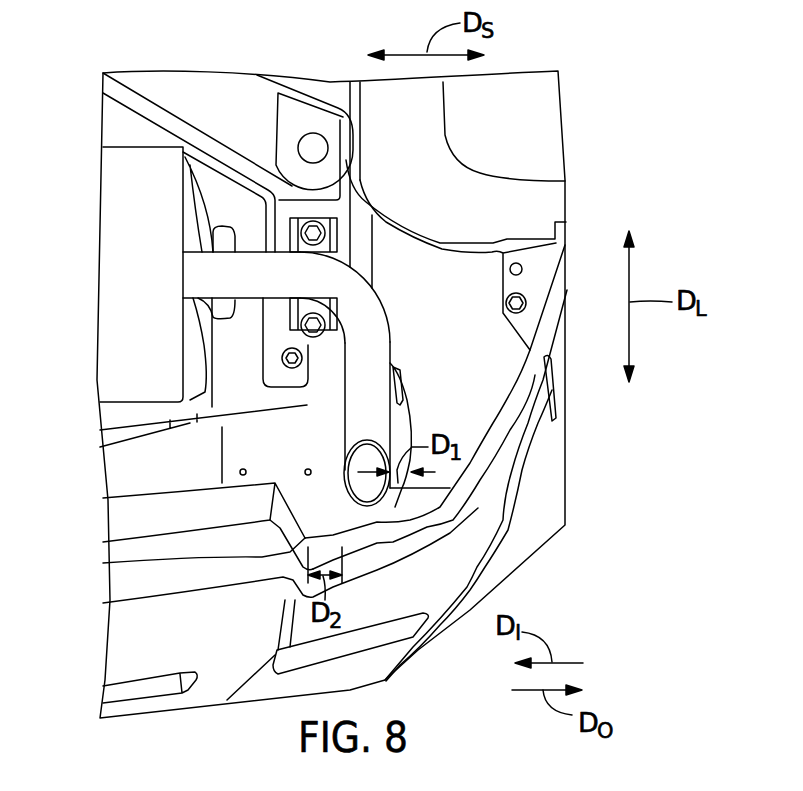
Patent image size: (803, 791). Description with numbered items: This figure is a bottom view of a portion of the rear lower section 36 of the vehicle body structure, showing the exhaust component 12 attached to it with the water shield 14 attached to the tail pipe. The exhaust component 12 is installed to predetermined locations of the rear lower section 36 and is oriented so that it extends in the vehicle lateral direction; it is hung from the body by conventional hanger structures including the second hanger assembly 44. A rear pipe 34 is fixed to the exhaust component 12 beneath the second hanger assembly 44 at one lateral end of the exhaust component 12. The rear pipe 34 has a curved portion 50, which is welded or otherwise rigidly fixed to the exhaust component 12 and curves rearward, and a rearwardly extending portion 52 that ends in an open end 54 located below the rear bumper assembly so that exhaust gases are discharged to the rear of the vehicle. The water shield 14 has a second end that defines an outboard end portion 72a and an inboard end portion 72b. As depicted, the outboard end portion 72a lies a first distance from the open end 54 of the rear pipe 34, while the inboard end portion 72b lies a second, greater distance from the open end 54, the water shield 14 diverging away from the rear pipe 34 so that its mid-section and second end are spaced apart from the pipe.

The exhaust component 12 is at (135, 216).
The curved portion 50 is at (307, 268).
The rear pipe 34 is at (363, 308).
The second hanger assembly 44 is at (310, 305).
The rearwardly extending portion 52 is at (363, 350).
The water shield 14 is at (418, 417).
The rear lower section 36 is at (183, 460).
The inboard end portion 72b is at (293, 551).
The open end 54 is at (370, 495).
The outboard end portion 72a is at (400, 497).